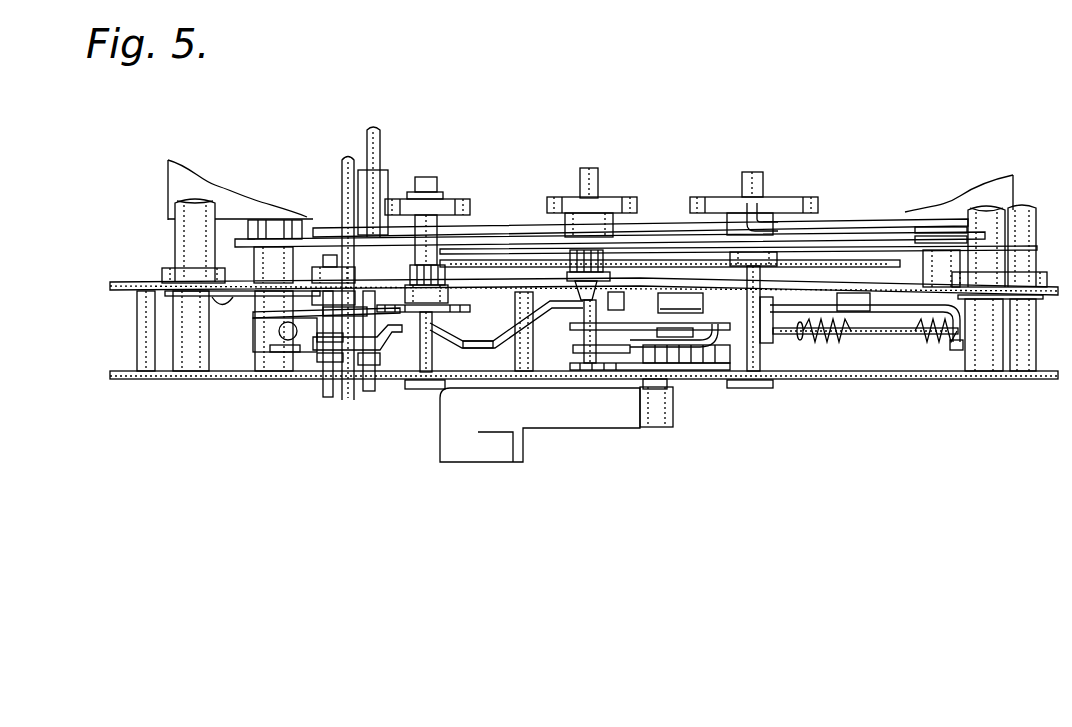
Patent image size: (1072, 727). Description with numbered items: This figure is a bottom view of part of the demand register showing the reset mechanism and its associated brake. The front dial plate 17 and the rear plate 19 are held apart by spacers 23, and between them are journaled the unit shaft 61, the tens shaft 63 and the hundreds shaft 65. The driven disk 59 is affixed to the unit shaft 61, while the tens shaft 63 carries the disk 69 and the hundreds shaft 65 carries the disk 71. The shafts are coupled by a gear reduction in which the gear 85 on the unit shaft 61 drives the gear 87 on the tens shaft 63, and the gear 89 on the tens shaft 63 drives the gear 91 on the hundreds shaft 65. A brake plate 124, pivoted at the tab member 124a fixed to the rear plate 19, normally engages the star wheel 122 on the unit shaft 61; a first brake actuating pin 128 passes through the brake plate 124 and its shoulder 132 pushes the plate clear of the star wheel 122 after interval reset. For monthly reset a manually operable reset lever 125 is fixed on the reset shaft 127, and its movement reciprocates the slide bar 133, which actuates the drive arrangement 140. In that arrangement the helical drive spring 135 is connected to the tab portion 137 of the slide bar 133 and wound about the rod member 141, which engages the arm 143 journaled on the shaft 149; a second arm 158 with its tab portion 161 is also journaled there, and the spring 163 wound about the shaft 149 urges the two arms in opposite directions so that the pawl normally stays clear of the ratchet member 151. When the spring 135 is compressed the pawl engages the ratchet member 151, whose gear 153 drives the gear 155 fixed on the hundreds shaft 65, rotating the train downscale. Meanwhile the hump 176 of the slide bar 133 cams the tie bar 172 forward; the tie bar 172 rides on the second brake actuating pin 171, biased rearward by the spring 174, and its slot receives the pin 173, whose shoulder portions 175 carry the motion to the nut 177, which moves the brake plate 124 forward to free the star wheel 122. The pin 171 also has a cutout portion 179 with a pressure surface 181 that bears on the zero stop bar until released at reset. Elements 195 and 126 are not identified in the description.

The cutout portion 179 is at (385, 212).
The pressure surface 181 is at (390, 188).
The nut 177 is at (325, 256).
The shoulder 132 is at (350, 272).
The unit shaft 61 is at (428, 178).
The driven disk 59 is at (448, 200).
The gear 85 is at (450, 268).
The gear 87 is at (490, 276).
The brake plate 124 is at (385, 357).
The tens shaft 63 is at (590, 172).
The disk 69 is at (627, 195).
The gear 89 is at (568, 265).
The star wheel 122 is at (458, 313).
The hump 176 is at (473, 347).
The post 195 is at (583, 325).
The arm 143 is at (637, 322).
The gear 91 is at (708, 257).
The hundreds shaft 65 is at (755, 168).
The disk 71 is at (803, 200).
The spring 163 is at (707, 327).
The slide bar 133 is at (884, 307).
The rod member 141 is at (902, 334).
The gear 155 is at (787, 355).
The helical drive spring 135 is at (921, 342).
The tab portion 137 is at (958, 347).
The gear 153 is at (773, 362).
The shaft 149 is at (720, 364).
The drive arrangement 140 is at (748, 363).
The ratchet member 151 is at (710, 358).
The second arm 158 is at (683, 358).
The cylinder 126 is at (637, 352).
The tab portion 161 is at (643, 340).
The reset lever 125 is at (463, 462).
The reset shaft 127 is at (533, 437).
The spacers 23 is at (145, 338).
The tab member 124a is at (257, 342).
The tie bar 172 is at (275, 333).
The shoulder portions 175 is at (305, 352).
The spring 174 is at (388, 373).
The pin 173 is at (328, 397).
The second brake actuating pin 171 is at (372, 380).
The first brake actuating pin 128 is at (355, 400).
The rear plate 19 is at (1057, 286).
The front dial plate 17 is at (1050, 372).